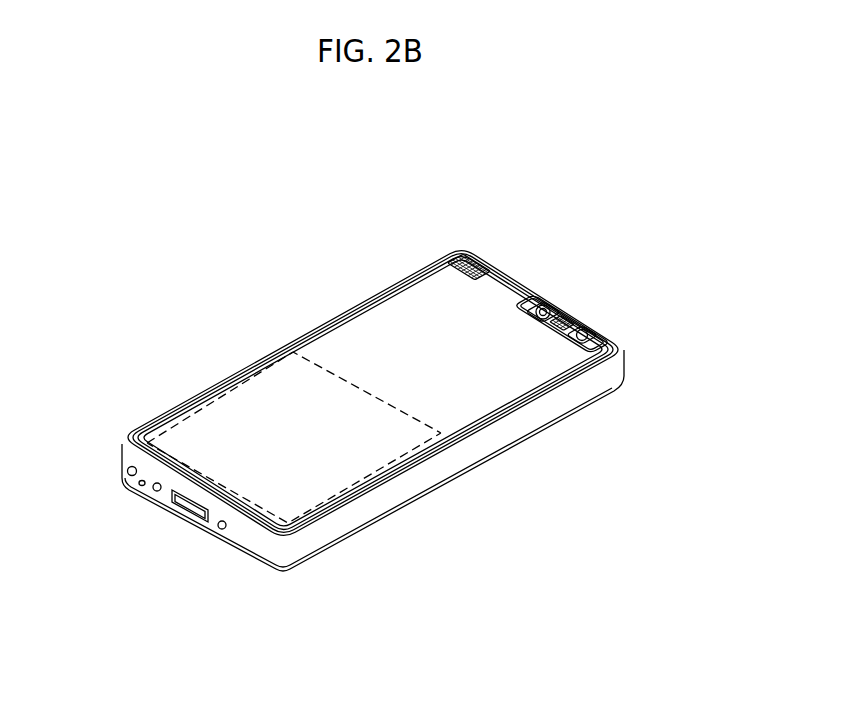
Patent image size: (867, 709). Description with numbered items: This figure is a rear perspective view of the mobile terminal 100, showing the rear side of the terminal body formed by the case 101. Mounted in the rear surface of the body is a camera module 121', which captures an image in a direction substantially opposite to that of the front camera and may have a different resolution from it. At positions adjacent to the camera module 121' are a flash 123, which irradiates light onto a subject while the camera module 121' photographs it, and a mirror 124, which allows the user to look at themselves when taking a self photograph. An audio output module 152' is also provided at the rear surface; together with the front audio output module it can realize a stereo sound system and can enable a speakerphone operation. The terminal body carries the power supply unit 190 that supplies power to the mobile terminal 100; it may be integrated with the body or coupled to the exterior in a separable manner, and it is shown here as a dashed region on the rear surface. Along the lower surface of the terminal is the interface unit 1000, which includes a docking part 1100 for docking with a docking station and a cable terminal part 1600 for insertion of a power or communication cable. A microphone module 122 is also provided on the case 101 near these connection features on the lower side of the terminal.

The mobile terminal 100 is at (383, 425).
The case 101 is at (620, 380).
The microphone module 122 is at (139, 485).
The cable terminal part 1600 is at (181, 512).
The docking part 1100 is at (220, 531).
The interface unit 1000 is at (159, 566).
The audio output module 152' is at (493, 243).
The camera module 121' is at (563, 285).
The flash 123 is at (567, 320).
The mirror 124 is at (586, 333).
The power supply unit 190 is at (377, 470).